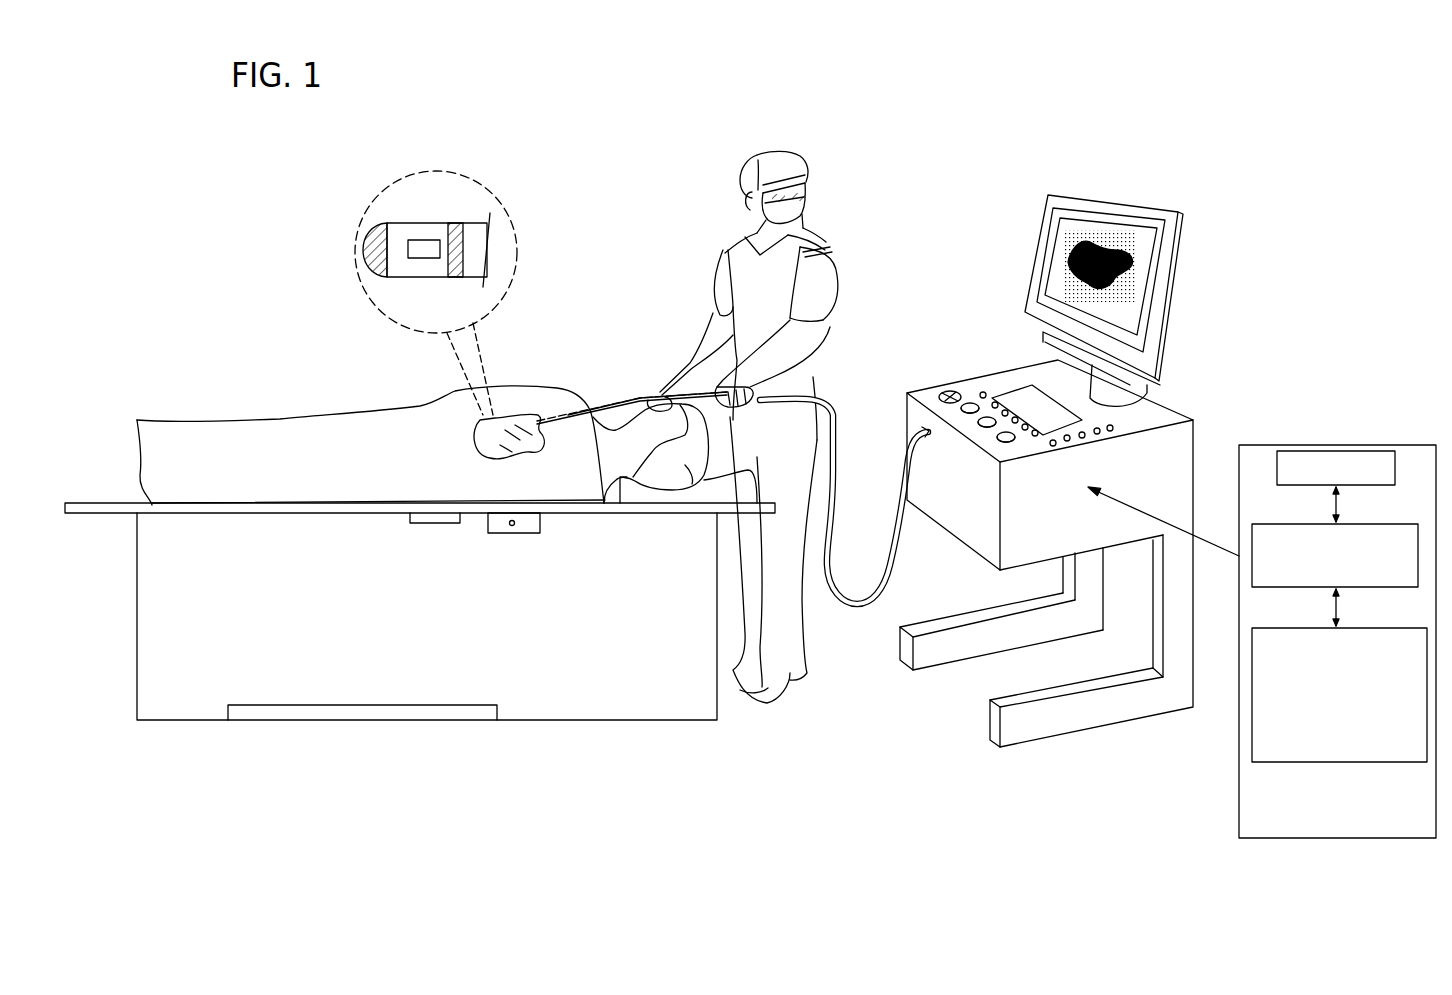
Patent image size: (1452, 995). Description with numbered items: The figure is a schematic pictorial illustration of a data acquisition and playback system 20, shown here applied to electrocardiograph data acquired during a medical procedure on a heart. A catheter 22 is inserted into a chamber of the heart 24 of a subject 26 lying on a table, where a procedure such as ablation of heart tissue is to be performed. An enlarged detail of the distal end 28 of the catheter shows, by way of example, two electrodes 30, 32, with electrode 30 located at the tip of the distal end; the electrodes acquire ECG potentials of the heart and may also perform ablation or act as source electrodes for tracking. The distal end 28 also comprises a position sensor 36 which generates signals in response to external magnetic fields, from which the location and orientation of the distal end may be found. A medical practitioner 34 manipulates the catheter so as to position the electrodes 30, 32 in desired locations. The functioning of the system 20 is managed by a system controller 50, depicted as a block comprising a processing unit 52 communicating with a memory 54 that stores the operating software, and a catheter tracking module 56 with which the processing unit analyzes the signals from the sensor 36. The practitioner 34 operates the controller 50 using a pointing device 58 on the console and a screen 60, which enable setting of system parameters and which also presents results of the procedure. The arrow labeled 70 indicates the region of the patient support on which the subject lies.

The data acquisition and playback system 20 is at (1082, 140).
The catheter 22 is at (836, 415).
The heart 24 is at (517, 387).
The subject 26 is at (693, 487).
The distal end 28 is at (473, 222).
The electrode 30 is at (380, 223).
The electrode 32 is at (455, 222).
The medical practitioner 34 is at (735, 248).
The position sensor 36 is at (418, 260).
The system controller 50 is at (1345, 445).
The processing unit 52 is at (1269, 524).
The memory 54 is at (1366, 452).
The catheter tracking module 56 is at (1252, 697).
The pointing device 58 is at (950, 395).
The screen 60 is at (1083, 202).
The patient support table 70 is at (576, 314).